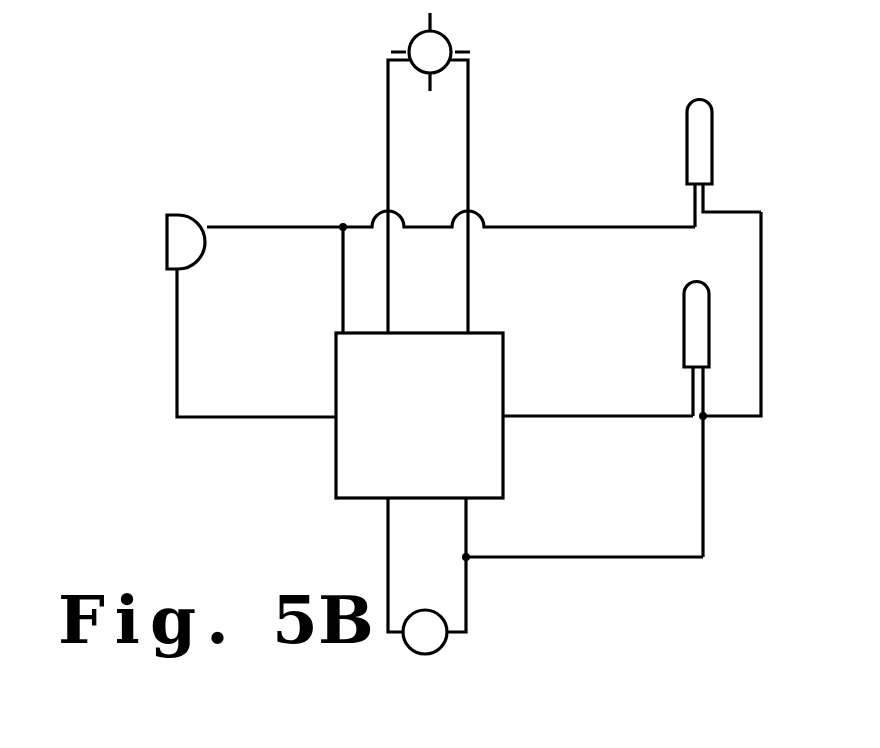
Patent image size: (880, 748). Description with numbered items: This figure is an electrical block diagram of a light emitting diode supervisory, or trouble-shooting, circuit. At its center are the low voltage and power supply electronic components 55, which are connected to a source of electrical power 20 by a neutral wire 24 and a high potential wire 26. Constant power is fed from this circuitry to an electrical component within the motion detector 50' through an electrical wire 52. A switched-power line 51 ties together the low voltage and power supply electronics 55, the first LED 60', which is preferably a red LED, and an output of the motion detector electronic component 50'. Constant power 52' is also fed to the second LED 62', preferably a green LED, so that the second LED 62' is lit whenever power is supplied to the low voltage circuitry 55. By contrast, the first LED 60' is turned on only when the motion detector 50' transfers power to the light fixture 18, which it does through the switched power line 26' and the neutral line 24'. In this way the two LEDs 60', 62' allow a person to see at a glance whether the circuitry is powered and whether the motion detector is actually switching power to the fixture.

The light fixture 18 is at (442, 44).
The switched power line 26' is at (357, 196).
The neutral line 24' is at (510, 196).
The switched-power line 51 is at (228, 226).
The motion detector 50' is at (164, 228).
The electrical wire 52 is at (235, 343).
The low voltage and power supply electronic components 55 is at (448, 369).
The constant power line 52' is at (632, 352).
The first LED 60' is at (734, 150).
The second LED 62' is at (673, 419).
The high potential wire 26 is at (356, 565).
The neutral wire 24 is at (575, 565).
The source of electrical power 20 is at (442, 642).